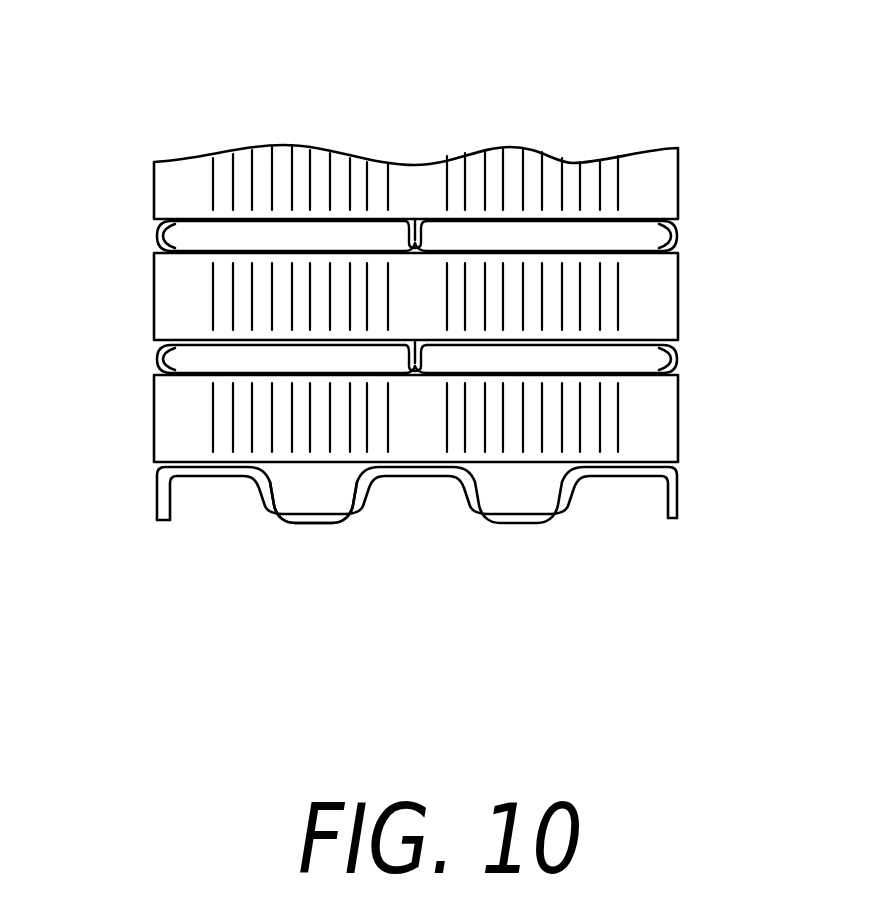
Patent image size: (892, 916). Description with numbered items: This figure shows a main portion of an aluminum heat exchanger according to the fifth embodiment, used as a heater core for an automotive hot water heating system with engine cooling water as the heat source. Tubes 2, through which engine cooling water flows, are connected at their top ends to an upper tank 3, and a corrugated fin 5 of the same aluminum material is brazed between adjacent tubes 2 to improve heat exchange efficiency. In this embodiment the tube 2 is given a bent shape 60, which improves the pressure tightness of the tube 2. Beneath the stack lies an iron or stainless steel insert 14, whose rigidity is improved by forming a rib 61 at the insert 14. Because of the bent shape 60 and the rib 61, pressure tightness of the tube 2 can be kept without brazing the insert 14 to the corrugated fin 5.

The bent shape 60 is at (419, 218).
The tube 2 is at (680, 239).
The upper tank 3 is at (678, 345).
The corrugated fin 5 is at (657, 423).
The insert 14 is at (155, 503).
The rib 61 is at (303, 508).